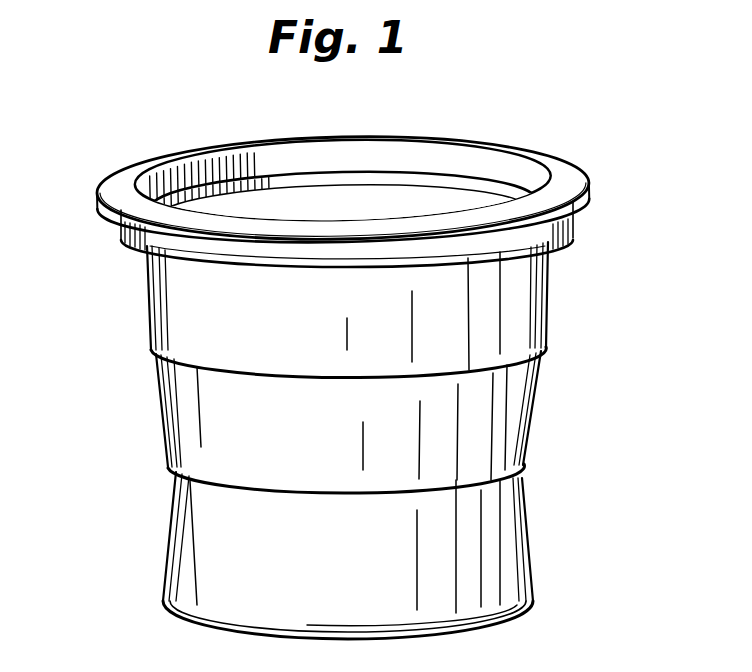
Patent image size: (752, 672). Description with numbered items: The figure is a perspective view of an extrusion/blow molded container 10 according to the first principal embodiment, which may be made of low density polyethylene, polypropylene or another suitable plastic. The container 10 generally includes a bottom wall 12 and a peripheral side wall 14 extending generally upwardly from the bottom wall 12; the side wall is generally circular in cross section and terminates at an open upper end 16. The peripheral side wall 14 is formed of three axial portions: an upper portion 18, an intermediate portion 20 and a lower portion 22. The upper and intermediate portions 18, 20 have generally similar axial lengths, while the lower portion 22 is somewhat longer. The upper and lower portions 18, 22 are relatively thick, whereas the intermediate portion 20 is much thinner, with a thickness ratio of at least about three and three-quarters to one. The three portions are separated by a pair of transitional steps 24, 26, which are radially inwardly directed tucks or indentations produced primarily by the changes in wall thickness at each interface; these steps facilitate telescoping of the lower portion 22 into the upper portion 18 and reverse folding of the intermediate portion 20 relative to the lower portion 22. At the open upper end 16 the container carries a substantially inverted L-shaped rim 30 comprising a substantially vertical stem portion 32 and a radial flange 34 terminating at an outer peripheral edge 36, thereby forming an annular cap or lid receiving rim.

The extrusion/blow molded container 10 is at (632, 290).
The bottom wall 12 is at (484, 628).
The peripheral side wall 14 is at (547, 410).
The open upper end 16 is at (414, 186).
The upper portion 18 is at (148, 309).
The intermediate portion 20 is at (178, 426).
The lower portion 22 is at (168, 540).
The transitional step 24 is at (156, 353).
The transitional step 26 is at (171, 471).
The inverted L-shaped rim 30 is at (136, 252).
The stem portion 32 is at (123, 232).
The radial flange 34 is at (573, 173).
The outer peripheral edge 36 is at (591, 191).